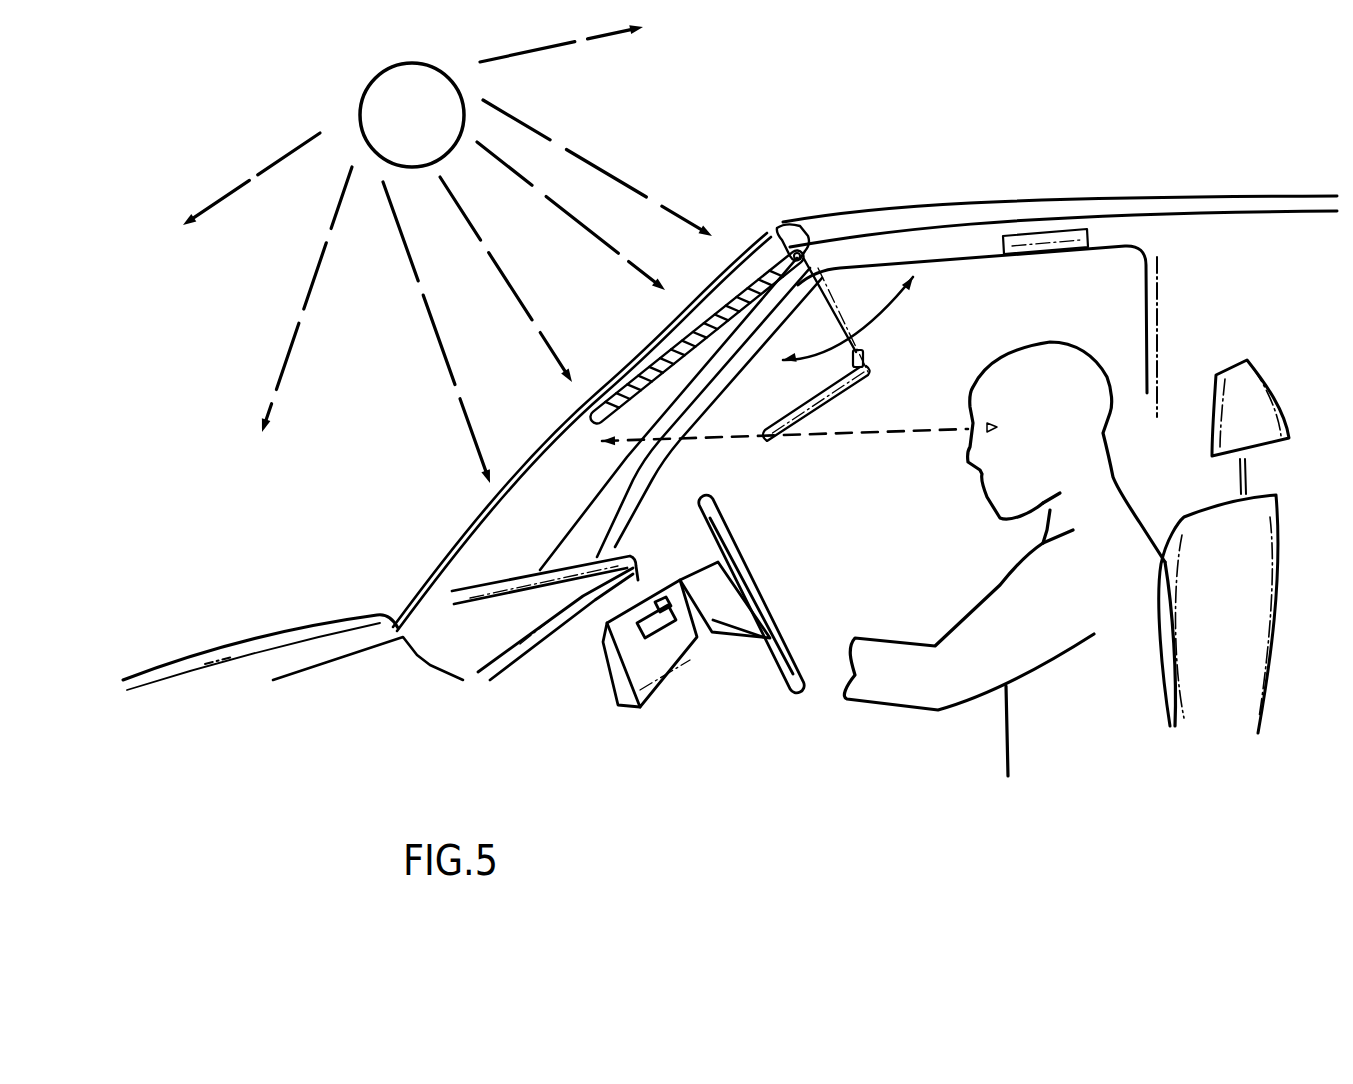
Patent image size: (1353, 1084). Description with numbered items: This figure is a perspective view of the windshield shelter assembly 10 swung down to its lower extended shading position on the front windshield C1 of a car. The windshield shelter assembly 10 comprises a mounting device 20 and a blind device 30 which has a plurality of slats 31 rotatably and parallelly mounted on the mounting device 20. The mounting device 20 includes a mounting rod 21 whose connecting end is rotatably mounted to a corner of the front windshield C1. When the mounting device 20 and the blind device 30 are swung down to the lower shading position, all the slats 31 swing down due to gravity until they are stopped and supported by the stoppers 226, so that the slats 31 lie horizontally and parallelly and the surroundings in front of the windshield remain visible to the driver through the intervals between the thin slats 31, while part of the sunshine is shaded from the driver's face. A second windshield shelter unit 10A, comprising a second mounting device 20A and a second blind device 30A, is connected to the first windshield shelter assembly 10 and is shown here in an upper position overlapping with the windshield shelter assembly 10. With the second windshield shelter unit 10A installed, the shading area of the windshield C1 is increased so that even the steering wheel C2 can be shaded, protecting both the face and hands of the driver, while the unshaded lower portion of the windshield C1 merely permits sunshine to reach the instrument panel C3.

The windshield shelter assembly 10 is at (712, 270).
The second windshield shelter unit 10A is at (587, 393).
The mounting device 20 is at (757, 271).
The second mounting device 20A is at (628, 365).
The mounting rod 21 is at (801, 247).
The slats 31 is at (700, 336).
The stoppers 226 is at (735, 300).
The blind device 30 is at (740, 316).
The second blind device 30A is at (648, 409).
The front windshield C1 is at (435, 572).
The steering wheel C2 is at (763, 600).
The instrument panel C3 is at (510, 587).